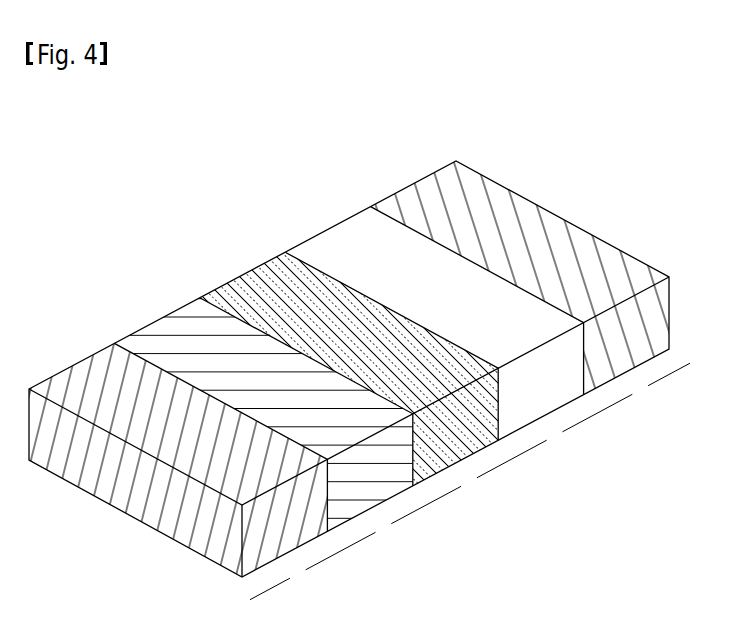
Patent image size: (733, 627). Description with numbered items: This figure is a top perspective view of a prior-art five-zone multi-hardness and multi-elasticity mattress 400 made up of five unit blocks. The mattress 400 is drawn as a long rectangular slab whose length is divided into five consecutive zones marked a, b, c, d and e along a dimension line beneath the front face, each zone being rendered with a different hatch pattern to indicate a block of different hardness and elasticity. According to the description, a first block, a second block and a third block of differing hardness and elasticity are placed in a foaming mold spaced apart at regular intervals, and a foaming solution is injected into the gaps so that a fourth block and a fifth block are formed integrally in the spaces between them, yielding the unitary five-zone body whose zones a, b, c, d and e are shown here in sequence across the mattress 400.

The multilayer composite structure 400 is at (359, 362).
The first layer section a is at (249, 586).
The second layer section b is at (334, 540).
The third layer section c is at (420, 494).
The fourth layer section d is at (506, 448).
The fifth layer section e is at (591, 402).